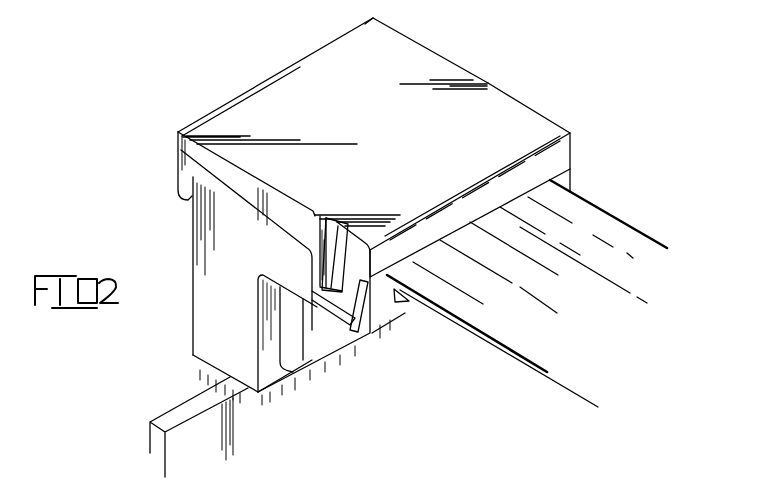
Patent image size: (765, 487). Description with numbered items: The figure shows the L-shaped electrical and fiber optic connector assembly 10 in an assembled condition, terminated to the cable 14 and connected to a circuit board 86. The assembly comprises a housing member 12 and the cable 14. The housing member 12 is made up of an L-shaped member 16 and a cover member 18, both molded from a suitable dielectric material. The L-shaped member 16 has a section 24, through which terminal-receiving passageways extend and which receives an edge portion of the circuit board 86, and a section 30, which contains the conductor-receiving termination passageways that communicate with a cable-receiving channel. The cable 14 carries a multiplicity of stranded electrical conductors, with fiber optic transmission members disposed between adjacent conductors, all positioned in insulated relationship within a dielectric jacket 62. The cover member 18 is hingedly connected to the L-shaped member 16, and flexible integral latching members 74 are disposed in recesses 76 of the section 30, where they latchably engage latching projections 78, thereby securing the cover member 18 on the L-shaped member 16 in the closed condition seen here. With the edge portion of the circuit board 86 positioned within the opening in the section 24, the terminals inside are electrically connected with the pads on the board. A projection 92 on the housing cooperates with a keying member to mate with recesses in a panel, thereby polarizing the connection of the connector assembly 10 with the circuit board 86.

The electrical and fiber optic connector assembly 10 is at (459, 45).
The housing member 12 is at (488, 84).
The cable 14 is at (622, 226).
The L-shaped member 16 is at (193, 287).
The cover member 18 is at (275, 116).
The section 24 is at (190, 343).
The section 30 is at (289, 243).
The dielectric jacket 62 is at (612, 309).
The flexible integral latching members 74 is at (347, 340).
The recesses 76 is at (327, 313).
The latching projections 78 is at (332, 283).
The circuit board 86 is at (227, 393).
The projection 92 is at (293, 372).